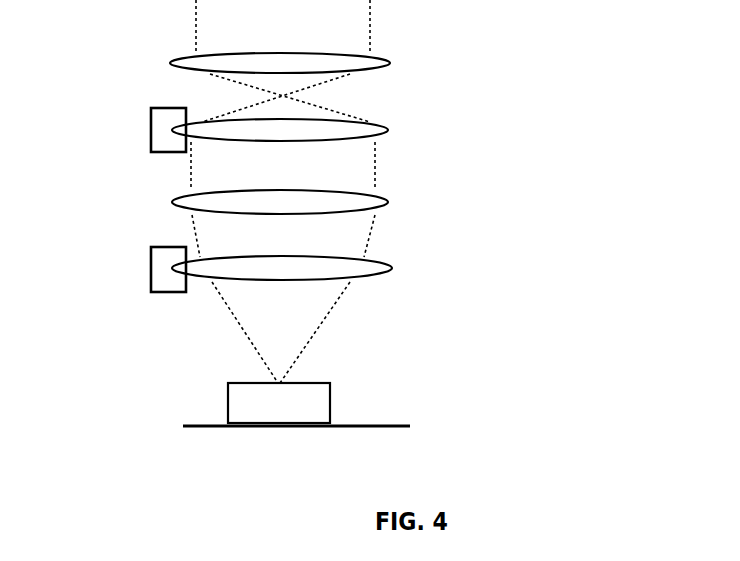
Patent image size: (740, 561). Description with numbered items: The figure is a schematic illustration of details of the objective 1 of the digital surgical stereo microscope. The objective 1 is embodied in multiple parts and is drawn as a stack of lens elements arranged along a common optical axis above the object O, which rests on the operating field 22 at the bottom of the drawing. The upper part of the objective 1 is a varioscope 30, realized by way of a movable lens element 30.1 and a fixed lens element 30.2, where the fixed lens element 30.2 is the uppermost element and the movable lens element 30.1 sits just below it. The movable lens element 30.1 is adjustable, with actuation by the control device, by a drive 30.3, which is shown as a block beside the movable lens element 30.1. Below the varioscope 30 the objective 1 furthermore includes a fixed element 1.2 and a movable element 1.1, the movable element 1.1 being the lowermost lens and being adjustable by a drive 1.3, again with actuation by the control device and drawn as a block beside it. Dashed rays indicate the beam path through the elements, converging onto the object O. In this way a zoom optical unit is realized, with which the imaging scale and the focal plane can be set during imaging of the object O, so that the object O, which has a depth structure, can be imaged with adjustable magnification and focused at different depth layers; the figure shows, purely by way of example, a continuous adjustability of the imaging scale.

The objective 1 is at (603, 3).
The movable element 1.1 is at (392, 268).
The fixed element 1.2 is at (388, 202).
The drive 1.3 is at (160, 265).
The varioscope 30 is at (513, 18).
The movable lens element 30.1 is at (388, 130).
The fixed lens element 30.2 is at (390, 63).
The drive 30.3 is at (160, 128).
The object O is at (330, 408).
The operating field 22 is at (405, 426).